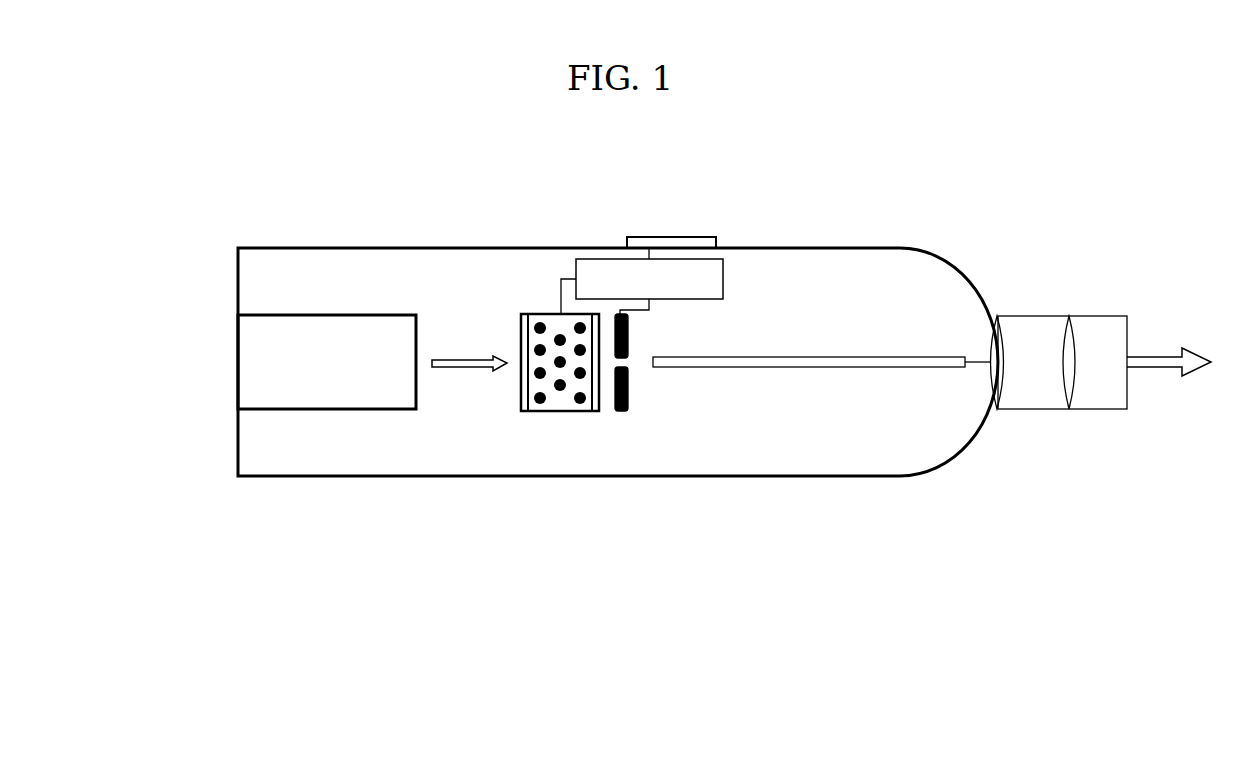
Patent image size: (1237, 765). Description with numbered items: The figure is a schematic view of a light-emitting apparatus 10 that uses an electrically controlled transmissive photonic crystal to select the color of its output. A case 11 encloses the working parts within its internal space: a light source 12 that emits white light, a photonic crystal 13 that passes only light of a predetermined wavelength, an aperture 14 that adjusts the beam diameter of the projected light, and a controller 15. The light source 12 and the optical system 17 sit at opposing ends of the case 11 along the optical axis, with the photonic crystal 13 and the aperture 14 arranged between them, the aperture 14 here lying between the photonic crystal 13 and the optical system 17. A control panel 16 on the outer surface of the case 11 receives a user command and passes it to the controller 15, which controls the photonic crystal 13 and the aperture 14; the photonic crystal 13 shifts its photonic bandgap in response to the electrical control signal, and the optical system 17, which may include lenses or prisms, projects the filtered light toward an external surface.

The light-emitting apparatus 10 is at (538, 487).
The case 11 is at (287, 478).
The light source 12 is at (250, 370).
The photonic crystal 13 is at (580, 400).
The aperture 14 is at (628, 410).
The controller 15 is at (593, 258).
The control panel 16 is at (697, 234).
The optical system 17 is at (1063, 340).